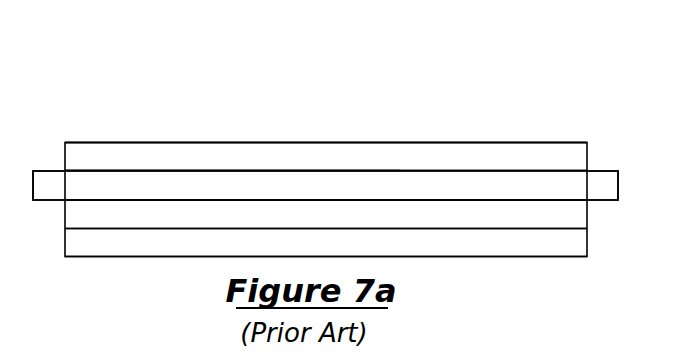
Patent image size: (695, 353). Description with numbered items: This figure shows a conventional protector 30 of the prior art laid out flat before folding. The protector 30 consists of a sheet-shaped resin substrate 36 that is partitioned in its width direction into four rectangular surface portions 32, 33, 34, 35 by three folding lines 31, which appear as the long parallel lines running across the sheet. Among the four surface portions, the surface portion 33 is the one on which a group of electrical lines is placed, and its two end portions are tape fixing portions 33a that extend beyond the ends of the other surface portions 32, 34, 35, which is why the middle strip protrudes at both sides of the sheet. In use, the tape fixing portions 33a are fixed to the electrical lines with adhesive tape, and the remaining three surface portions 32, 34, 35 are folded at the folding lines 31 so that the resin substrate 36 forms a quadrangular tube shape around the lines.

The protector 30 is at (517, 76).
The folding lines 31 is at (258, 214).
The surface portion 32 is at (108, 147).
The surface portion 33 is at (155, 180).
The tape fixing portions 33a is at (45, 194).
The surface portion 34 is at (388, 208).
The surface portion 35 is at (454, 242).
The resin substrate 36 is at (545, 142).